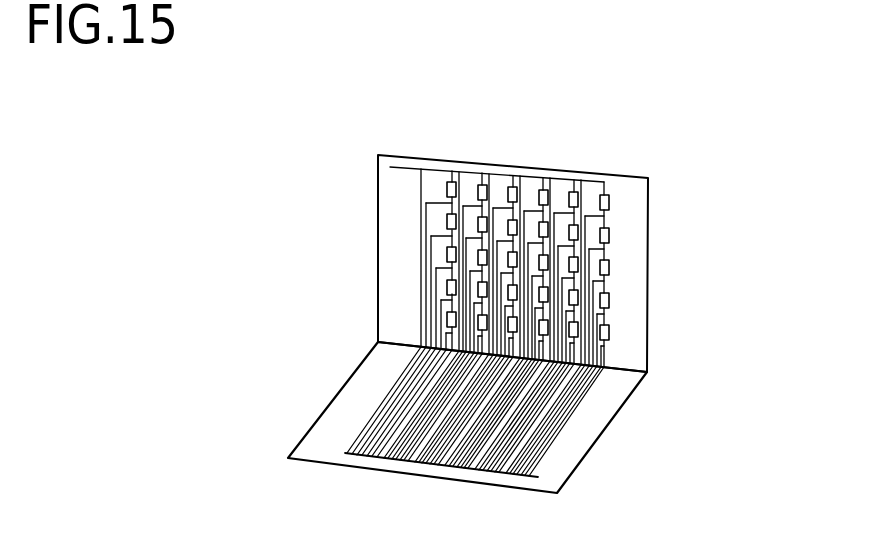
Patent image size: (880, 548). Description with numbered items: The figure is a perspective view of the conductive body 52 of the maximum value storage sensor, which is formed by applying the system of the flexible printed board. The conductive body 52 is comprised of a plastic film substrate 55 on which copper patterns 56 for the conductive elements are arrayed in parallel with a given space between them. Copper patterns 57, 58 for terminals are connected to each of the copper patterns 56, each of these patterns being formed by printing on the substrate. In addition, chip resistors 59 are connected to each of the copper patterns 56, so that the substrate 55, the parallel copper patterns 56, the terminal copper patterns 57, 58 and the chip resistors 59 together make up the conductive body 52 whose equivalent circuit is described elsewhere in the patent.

The conductive body 52 is at (621, 146).
The plastic film substrate 55 is at (648, 306).
The copper patterns 56 is at (367, 435).
The copper pattern for terminal 57 is at (422, 463).
The copper pattern for terminal 58 is at (410, 167).
The chip resistors 59 is at (458, 193).